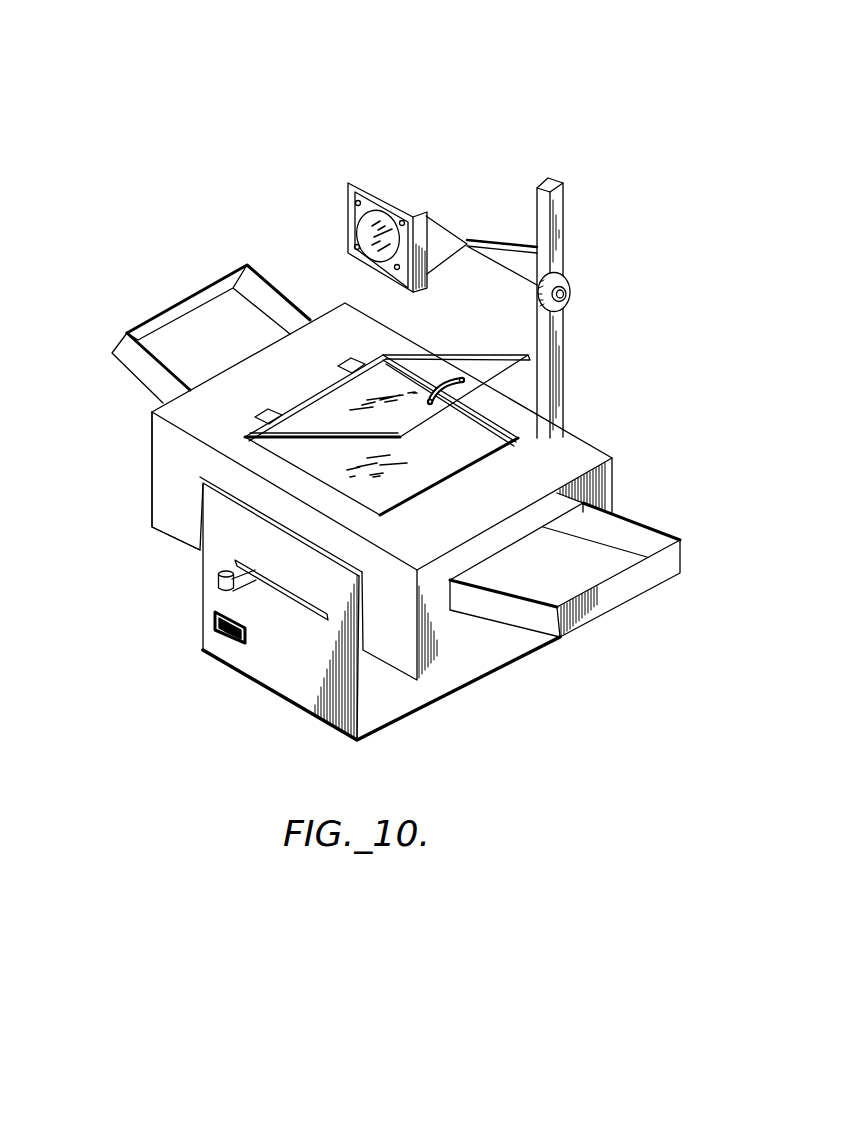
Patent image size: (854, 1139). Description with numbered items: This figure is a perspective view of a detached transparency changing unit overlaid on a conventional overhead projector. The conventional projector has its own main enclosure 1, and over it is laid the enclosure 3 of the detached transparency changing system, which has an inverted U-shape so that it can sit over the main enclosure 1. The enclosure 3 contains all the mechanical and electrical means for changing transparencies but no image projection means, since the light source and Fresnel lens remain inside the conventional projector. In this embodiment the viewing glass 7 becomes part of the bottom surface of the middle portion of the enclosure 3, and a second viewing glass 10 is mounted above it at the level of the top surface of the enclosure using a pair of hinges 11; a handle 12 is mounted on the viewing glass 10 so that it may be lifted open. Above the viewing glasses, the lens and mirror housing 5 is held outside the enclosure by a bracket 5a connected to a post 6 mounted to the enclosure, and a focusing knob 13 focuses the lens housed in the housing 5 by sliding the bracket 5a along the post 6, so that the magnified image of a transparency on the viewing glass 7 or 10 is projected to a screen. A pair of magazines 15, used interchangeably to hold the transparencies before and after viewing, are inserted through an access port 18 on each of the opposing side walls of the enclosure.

The enclosure for a conventional overhead projector 1 is at (285, 640).
The enclosure for a detached transparency changing system 3 is at (167, 473).
The lens and mirror housing 5 is at (423, 215).
The bracket 5a is at (470, 243).
The post 6 is at (560, 223).
The viewing glass 7 is at (473, 447).
The viewing glass 10 is at (318, 418).
The hinge 11 is at (350, 367).
The handle 12 is at (460, 380).
The focusing knob 13 is at (572, 282).
The magazine 15 is at (157, 313).
The access port 18 is at (453, 612).